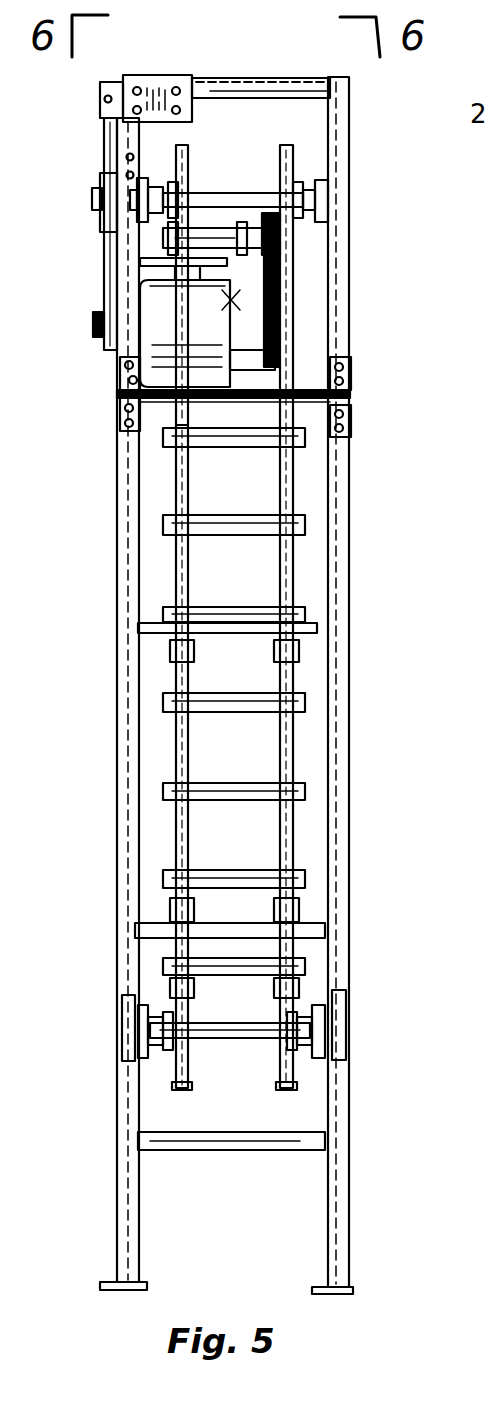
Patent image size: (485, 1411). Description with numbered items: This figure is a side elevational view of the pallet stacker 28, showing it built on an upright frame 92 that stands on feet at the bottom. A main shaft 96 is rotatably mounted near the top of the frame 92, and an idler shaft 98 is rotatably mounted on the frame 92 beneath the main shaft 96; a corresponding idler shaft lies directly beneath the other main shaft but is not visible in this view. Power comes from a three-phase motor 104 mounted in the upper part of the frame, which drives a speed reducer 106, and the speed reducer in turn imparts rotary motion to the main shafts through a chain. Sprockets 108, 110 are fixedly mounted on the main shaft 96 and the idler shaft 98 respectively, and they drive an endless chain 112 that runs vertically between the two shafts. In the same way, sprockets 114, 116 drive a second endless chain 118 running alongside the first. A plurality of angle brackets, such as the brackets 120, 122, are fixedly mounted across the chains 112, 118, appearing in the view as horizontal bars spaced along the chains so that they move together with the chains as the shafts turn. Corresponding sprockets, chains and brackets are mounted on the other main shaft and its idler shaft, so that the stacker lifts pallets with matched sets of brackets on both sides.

The pallet stacker 28 is at (380, 616).
The upright frame 92 is at (343, 470).
The main shaft 96 is at (265, 202).
The idler shaft 98 is at (230, 1032).
The three-phase motor 104 is at (240, 292).
The speed reducer 106 is at (267, 358).
The sprocket 108 is at (186, 160).
The sprocket 110 is at (170, 1082).
The endless chain 112 is at (174, 590).
The sprocket 114 is at (295, 174).
The sprocket 116 is at (290, 1008).
The endless chain 118 is at (293, 750).
The angle bracket 120 is at (297, 655).
The angle bracket 122 is at (293, 787).